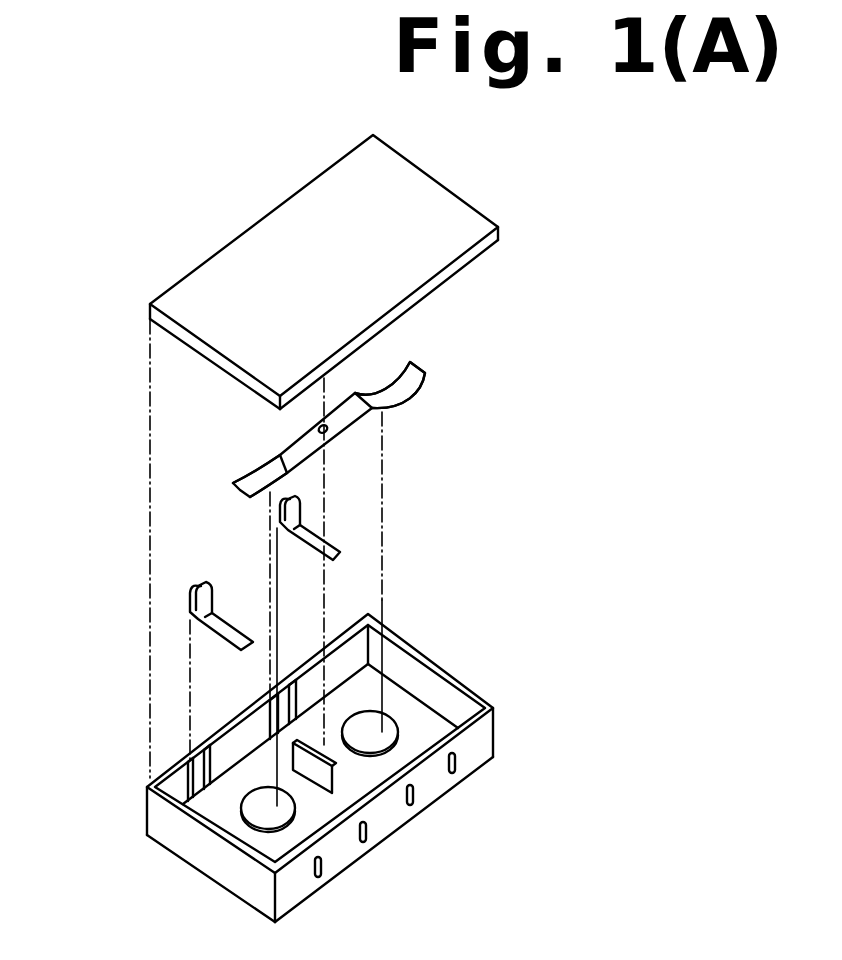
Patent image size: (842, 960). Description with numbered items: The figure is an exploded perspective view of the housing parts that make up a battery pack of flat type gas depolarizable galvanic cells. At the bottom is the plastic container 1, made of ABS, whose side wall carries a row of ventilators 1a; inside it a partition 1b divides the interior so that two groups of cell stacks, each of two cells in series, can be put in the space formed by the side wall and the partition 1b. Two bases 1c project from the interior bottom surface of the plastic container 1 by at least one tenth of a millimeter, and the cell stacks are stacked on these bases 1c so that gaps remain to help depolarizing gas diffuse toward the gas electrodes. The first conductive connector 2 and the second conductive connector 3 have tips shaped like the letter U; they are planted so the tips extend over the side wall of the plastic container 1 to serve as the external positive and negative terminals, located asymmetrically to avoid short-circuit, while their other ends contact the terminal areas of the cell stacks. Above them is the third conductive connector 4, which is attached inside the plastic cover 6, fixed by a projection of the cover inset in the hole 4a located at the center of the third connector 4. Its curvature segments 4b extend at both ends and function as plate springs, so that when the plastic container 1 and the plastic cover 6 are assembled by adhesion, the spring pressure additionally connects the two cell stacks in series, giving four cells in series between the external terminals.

The plastic container 1 is at (430, 662).
The ventilators 1a is at (458, 763).
The partition 1b is at (293, 760).
The bases 1c is at (283, 828).
The first conductive connector 2 is at (330, 545).
The second conductive connector 3 is at (227, 627).
The third conductive connector 4 is at (266, 431).
The hole 4a is at (316, 428).
The curvature segments 4b is at (272, 483).
The plastic cover 6 is at (283, 215).